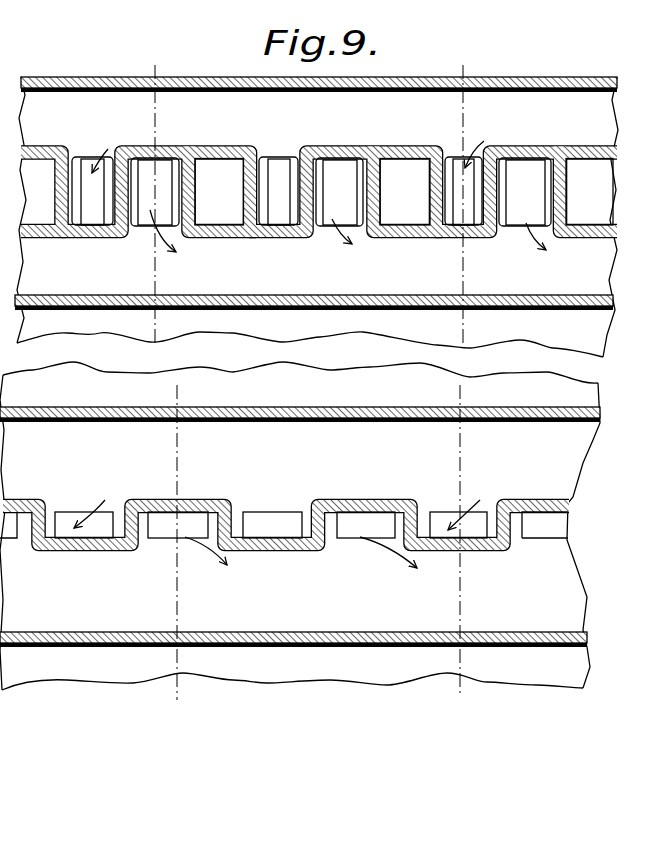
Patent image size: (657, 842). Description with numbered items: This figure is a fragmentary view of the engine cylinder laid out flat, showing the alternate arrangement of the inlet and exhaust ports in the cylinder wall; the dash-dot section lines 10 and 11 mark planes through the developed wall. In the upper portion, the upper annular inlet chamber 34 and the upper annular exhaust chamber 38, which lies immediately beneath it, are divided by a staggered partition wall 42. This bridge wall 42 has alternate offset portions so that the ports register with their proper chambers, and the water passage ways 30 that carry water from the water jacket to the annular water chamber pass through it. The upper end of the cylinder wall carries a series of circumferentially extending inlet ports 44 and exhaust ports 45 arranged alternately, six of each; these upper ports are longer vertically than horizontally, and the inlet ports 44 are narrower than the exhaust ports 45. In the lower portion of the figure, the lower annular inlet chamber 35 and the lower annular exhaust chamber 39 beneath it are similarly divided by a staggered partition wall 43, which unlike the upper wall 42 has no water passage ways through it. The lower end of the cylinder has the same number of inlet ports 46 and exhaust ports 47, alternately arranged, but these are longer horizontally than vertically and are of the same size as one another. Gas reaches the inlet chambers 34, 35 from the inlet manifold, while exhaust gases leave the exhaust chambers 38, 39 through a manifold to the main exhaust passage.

The section line 10- 10 is at (165, 377).
The section line 11- 11 is at (457, 378).
The passage way 30 is at (402, 175).
The upper annular inlet chamber 34 is at (368, 112).
The lower annular inlet chamber 35 is at (306, 463).
The upper annular exhaust chamber 38 is at (197, 273).
The lower annular exhaust chamber 39 is at (316, 595).
The staggered partition wall 42 is at (397, 229).
The staggered partition wall 43 is at (294, 548).
The inlet port 44 is at (303, 137).
The exhaust port 45 is at (148, 224).
The inlet port 46 is at (292, 503).
The exhaust port 47 is at (350, 535).